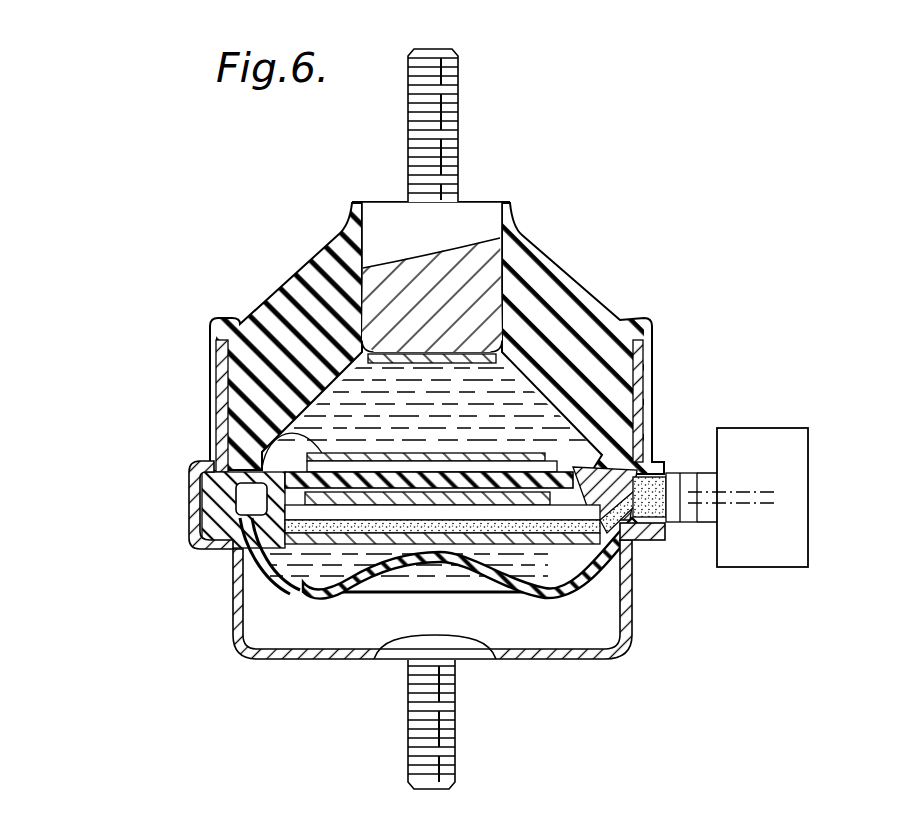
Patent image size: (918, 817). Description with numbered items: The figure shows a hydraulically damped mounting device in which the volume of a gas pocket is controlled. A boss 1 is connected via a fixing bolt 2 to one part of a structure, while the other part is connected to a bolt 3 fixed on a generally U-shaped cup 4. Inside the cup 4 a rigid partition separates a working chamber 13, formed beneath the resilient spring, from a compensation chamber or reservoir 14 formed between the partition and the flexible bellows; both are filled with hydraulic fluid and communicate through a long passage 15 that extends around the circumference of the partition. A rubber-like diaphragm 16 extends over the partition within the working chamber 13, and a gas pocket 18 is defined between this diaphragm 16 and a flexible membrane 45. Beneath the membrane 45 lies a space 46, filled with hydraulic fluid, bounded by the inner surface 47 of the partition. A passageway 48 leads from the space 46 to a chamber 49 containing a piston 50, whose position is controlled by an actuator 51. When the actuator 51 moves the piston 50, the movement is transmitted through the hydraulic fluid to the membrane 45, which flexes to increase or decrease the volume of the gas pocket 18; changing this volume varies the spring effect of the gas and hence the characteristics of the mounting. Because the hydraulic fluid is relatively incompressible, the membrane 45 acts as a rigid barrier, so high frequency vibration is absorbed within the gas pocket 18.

The boss 1 is at (478, 210).
The fixing bolt 2 is at (458, 132).
The bolt 3 is at (454, 763).
The cup 4 is at (303, 660).
The working chamber 13 is at (548, 425).
The compensation chamber or reservoir 14 is at (292, 596).
The passage 15 is at (248, 518).
The diaphragm 16 is at (322, 456).
The gas pocket 18 is at (298, 573).
The flexible membrane 45 is at (547, 548).
The space 46 is at (557, 517).
The inner surface of the partition 47 is at (472, 530).
The passageway 48 is at (630, 537).
The chamber 49 is at (671, 474).
The piston 50 is at (688, 507).
The actuator 51 is at (787, 437).